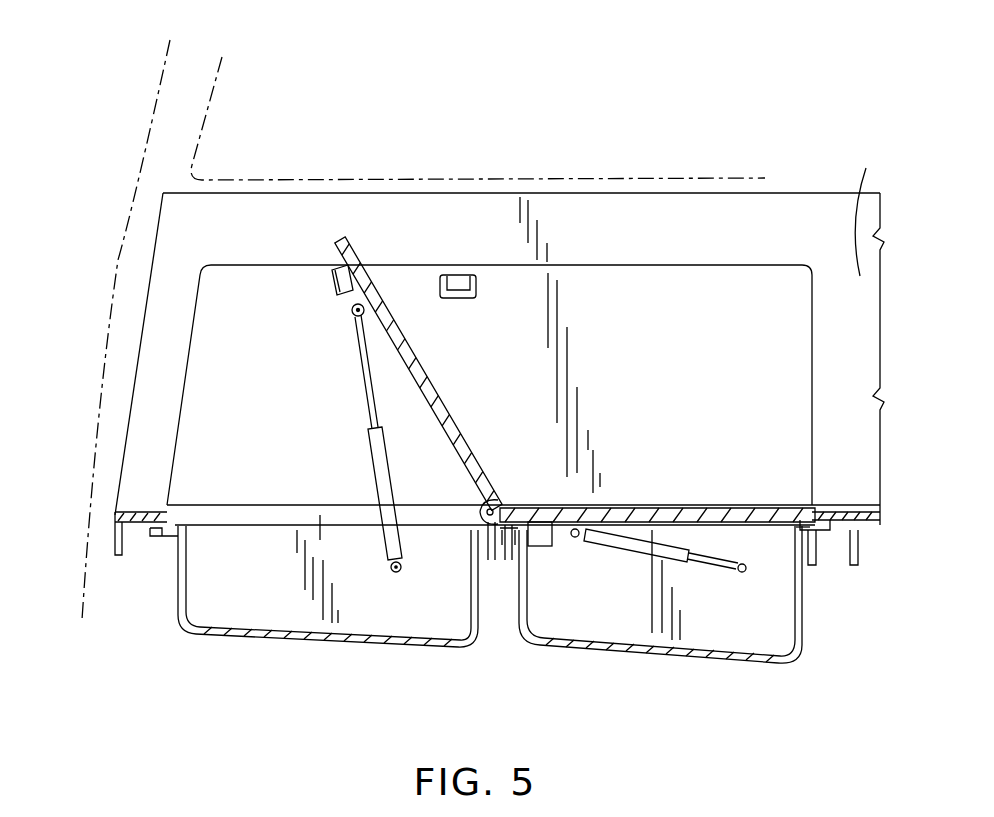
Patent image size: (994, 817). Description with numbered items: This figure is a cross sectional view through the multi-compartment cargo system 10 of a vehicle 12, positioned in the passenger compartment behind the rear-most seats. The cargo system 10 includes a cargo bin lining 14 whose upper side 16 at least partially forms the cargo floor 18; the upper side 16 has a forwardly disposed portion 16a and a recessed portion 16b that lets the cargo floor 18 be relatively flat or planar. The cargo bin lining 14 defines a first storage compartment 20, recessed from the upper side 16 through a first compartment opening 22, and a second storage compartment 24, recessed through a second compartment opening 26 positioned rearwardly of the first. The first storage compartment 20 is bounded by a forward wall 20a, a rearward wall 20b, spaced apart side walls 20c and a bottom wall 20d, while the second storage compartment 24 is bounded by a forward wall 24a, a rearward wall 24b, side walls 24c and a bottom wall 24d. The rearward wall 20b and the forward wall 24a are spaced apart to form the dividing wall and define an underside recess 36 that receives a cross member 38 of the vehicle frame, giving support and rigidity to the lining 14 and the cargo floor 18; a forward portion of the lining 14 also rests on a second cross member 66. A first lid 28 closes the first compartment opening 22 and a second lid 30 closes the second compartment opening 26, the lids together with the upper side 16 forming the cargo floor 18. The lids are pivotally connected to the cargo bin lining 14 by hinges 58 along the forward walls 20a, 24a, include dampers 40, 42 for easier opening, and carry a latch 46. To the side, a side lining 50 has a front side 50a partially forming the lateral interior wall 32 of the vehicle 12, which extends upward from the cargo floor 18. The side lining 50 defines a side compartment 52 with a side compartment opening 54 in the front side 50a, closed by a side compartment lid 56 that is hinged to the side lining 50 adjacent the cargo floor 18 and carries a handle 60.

The multi-compartment cargo system 10 is at (423, 350).
The vehicle 12 is at (155, 72).
The cargo bin lining 14 is at (490, 628).
The upper side 16 is at (246, 503).
The forwardly disposed portion 16a is at (866, 505).
The recessed portion 16b is at (166, 500).
The cargo floor 18 is at (645, 503).
The first storage compartment 20 is at (701, 628).
The forward wall 20a is at (810, 600).
The rearward wall 20b is at (556, 600).
The side walls 20c is at (745, 620).
The bottom wall 20d is at (612, 658).
The first compartment opening 22 is at (718, 515).
The second storage compartment 24 is at (342, 619).
The forward wall 24a is at (484, 612).
The rearward wall 24b is at (190, 580).
The side walls 24c is at (372, 608).
The bottom wall 24d is at (352, 644).
The second compartment opening 26 is at (320, 515).
The first lid 28 is at (618, 505).
The second lid 30 is at (430, 395).
The lateral interior wall 32 is at (862, 335).
The underside recess 36 is at (500, 605).
The cross member 38 is at (480, 552).
The damper 40 is at (690, 570).
The damper 42 is at (385, 488).
The latch 46 is at (330, 290).
The side lining 50 is at (172, 276).
The front side 50a is at (867, 207).
The side compartment 52 is at (560, 345).
The side compartment opening 54 is at (812, 350).
The side compartment lid 56 is at (742, 293).
The hinges 58 is at (485, 520).
The handle 60 is at (456, 283).
The second cross member 66 is at (860, 540).